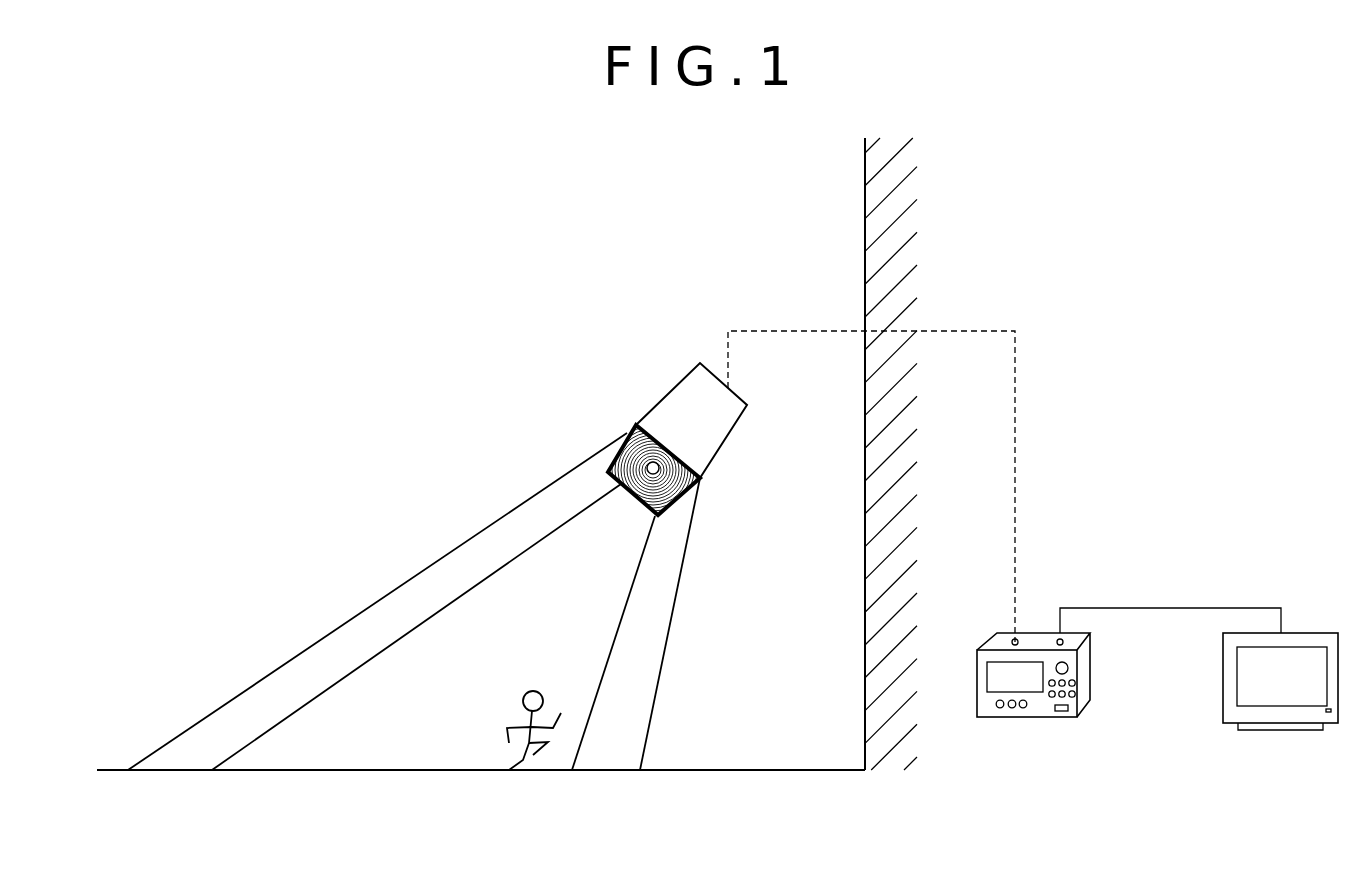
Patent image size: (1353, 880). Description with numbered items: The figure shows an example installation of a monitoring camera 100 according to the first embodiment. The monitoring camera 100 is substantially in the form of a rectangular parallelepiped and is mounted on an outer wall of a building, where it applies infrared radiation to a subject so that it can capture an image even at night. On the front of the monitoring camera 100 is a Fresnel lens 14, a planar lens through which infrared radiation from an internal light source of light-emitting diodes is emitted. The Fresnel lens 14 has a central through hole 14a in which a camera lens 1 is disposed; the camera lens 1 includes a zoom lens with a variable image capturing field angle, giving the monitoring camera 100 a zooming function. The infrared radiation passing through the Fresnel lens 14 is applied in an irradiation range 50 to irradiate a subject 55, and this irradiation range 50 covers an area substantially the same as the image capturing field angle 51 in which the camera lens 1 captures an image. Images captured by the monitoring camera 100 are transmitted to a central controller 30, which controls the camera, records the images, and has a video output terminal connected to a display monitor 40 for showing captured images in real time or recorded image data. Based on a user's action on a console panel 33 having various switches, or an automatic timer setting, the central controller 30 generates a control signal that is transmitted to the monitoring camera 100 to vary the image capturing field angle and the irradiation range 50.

The monitoring camera 100 is at (643, 327).
The camera lens 1 is at (625, 442).
The Fresnel lens 14 is at (672, 507).
The central through hole 14a is at (654, 462).
The irradiation range 50 is at (411, 575).
The image capturing field angle 51 is at (303, 700).
The subject 55 is at (543, 750).
The central controller 30 is at (1072, 597).
The console panel 33 is at (1037, 703).
The display monitor 40 is at (1292, 580).